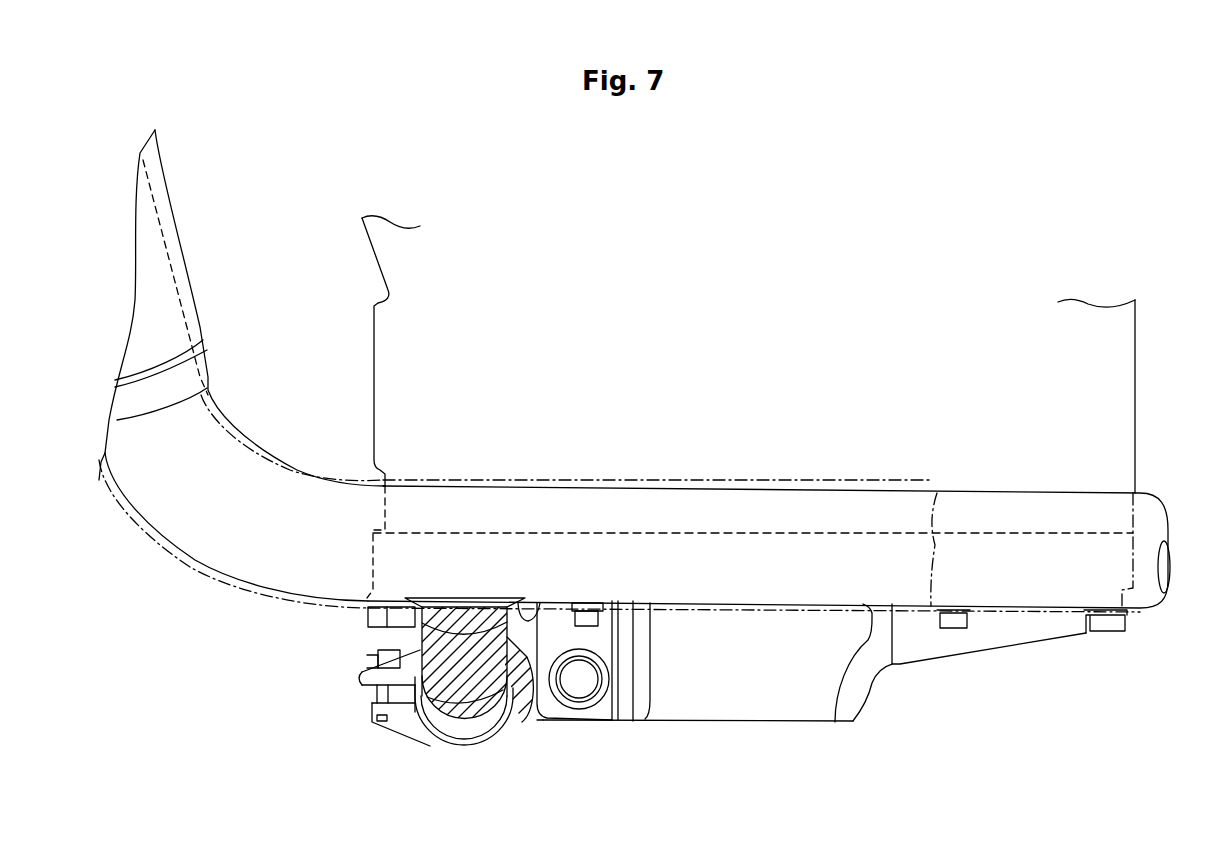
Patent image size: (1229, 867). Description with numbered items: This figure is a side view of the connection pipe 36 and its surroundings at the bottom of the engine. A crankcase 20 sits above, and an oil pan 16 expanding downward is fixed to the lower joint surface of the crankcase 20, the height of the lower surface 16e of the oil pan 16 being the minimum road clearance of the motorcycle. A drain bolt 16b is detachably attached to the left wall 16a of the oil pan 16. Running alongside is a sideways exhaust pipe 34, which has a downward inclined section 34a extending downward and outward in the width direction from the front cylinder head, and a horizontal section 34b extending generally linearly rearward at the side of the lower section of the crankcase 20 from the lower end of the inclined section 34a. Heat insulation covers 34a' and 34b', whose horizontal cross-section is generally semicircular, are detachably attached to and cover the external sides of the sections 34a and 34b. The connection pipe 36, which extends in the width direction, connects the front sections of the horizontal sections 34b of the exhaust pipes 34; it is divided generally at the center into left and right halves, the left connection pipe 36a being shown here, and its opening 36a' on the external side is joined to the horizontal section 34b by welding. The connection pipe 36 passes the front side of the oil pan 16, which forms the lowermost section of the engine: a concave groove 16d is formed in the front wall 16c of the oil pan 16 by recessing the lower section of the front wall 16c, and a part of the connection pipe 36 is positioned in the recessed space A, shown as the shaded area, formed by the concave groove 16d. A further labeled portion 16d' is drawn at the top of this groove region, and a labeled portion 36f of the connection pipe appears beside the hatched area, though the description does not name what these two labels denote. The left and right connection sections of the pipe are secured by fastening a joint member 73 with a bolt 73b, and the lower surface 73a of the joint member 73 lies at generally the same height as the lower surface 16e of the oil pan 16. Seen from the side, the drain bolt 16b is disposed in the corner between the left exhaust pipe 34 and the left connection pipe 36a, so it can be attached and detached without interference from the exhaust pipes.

The oil pan 16 is at (790, 733).
The left wall 16a is at (710, 706).
The drain bolt 16b is at (592, 702).
The front wall 16c is at (372, 558).
The concave groove 16d is at (591, 694).
The bracket top plate 16d' is at (479, 575).
The lower surface 16e is at (760, 723).
The crankcase 20 is at (1140, 339).
The sideways exhaust pipe 34 is at (232, 585).
The downward inclined section 34a is at (198, 277).
The heat insulation cover 34a' is at (195, 325).
The horizontal section 34b is at (766, 412).
The heat insulation cover 34b' is at (656, 437).
The connection pipe 36 is at (413, 638).
The left connection pipe 36a is at (472, 740).
The opening 36a' is at (563, 593).
The holder flange 36f is at (513, 668).
The joint member 73 is at (410, 737).
The lower surface 73a is at (470, 751).
The bolt 73b is at (373, 722).
The recessed space A is at (462, 632).